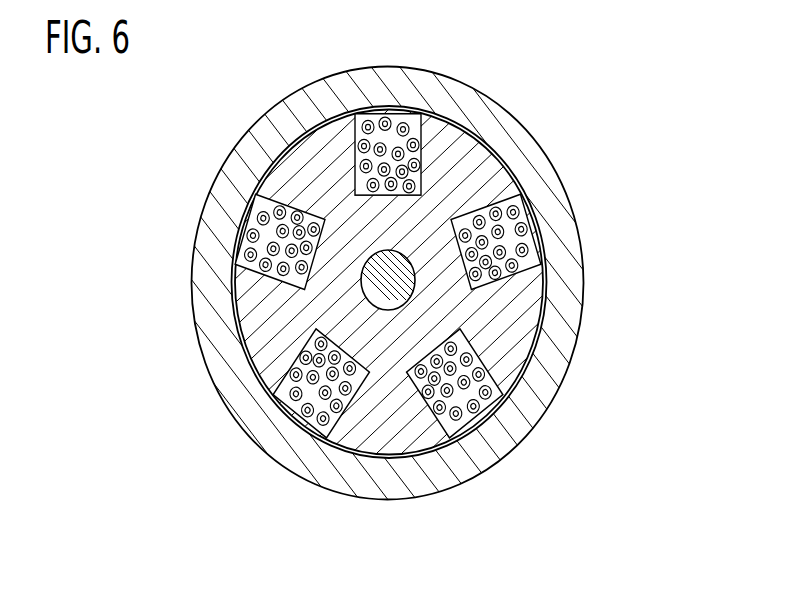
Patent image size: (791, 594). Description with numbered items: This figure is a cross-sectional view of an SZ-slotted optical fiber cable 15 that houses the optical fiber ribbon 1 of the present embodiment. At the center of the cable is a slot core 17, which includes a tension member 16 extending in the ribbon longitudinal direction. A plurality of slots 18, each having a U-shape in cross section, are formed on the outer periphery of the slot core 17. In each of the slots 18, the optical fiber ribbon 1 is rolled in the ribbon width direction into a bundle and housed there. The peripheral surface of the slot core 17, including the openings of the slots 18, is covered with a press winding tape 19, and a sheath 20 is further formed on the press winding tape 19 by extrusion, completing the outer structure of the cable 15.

The optical fiber ribbon 1 is at (381, 117).
The SZ-slotted optical fiber cable 15 is at (556, 146).
The tension member 16 is at (384, 309).
The slot core 17 is at (485, 143).
The slots 18 is at (345, 227).
The press winding tape 19 is at (400, 462).
The sheath 20 is at (570, 333).